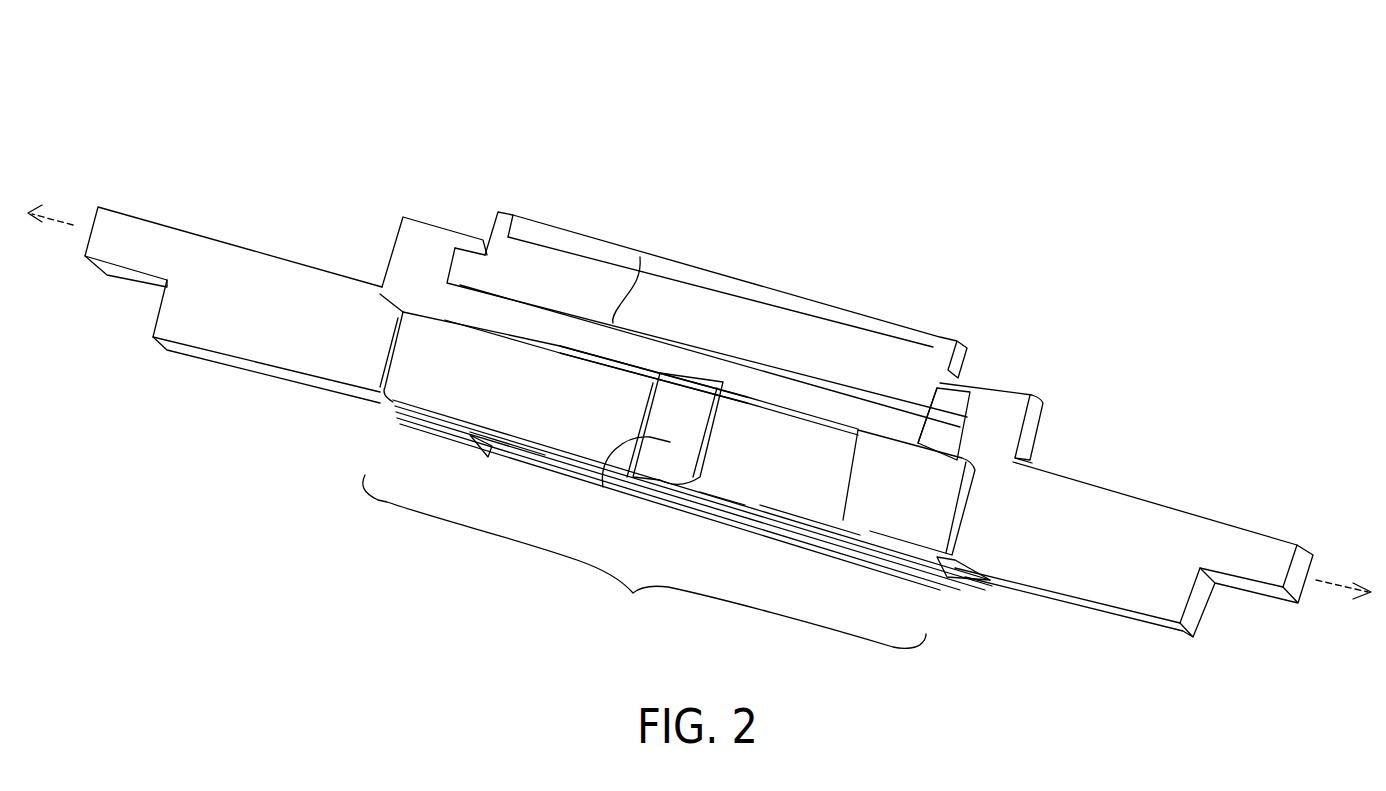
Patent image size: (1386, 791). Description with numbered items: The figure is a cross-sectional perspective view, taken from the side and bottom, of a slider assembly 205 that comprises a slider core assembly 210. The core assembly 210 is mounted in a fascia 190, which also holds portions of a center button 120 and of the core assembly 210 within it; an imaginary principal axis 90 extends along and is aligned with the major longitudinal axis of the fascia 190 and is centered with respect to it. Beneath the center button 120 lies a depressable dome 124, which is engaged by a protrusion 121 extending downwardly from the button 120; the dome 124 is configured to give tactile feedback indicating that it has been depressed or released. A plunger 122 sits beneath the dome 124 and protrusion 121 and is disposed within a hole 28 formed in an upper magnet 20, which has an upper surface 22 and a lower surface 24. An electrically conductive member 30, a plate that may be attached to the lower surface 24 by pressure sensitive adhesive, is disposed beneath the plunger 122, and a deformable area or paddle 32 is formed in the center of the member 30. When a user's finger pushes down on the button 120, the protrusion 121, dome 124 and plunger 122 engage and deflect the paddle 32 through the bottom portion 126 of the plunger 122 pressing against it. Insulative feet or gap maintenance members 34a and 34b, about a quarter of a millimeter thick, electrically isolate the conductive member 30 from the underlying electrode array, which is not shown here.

The slider assembly 205 is at (501, 133).
The imaginary principal axis 90 is at (54, 217).
The fascia 190 is at (145, 238).
The upper magnet 20 is at (422, 343).
The upper surface 22 is at (962, 398).
The center button 120 is at (888, 337).
The depressable dome 124 is at (640, 251).
The protrusion 121 is at (755, 355).
The plunger 122 is at (610, 477).
The bottom portion 126 is at (665, 490).
The deformable area 32 is at (631, 489).
The lower surface 24 is at (845, 527).
The electrically conductive member 30 is at (532, 448).
The hole 28 is at (717, 503).
The insulative foot 34a is at (442, 440).
The insulative foot 34b is at (917, 568).
The slider core assembly 210 is at (644, 561).